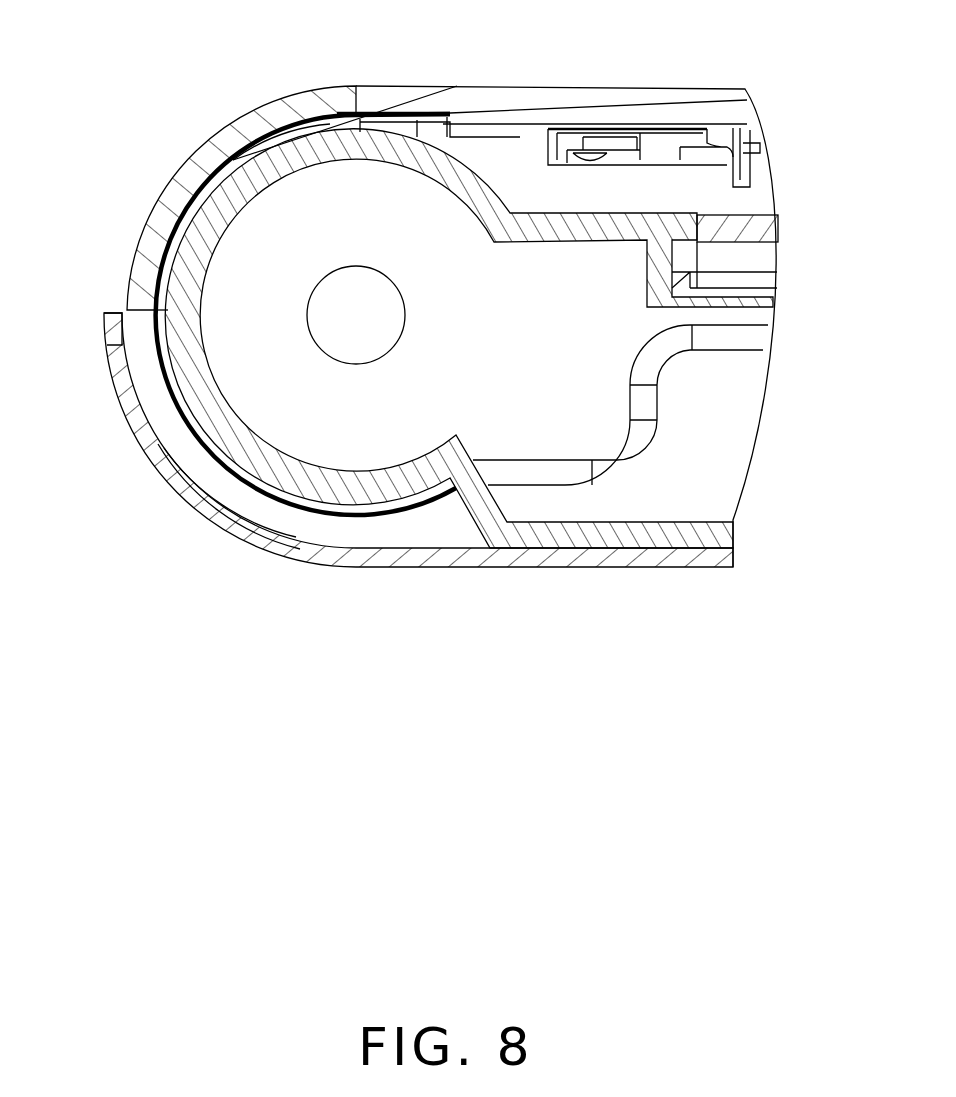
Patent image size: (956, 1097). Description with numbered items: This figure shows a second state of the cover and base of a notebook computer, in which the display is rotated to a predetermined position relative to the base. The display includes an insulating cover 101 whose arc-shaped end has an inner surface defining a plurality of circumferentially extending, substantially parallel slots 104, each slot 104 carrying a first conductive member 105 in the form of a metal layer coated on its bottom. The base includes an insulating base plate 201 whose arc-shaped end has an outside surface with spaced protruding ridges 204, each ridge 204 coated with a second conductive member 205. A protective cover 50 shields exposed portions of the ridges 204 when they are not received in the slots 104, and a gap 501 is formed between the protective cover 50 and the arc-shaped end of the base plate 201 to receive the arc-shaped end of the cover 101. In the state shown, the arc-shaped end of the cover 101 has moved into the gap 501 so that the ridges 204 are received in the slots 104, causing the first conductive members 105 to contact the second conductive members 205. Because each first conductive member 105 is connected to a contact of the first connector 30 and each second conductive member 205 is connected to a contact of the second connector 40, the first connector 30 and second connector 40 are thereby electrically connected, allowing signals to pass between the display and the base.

The first connector 30 is at (502, 147).
The second connector 40 is at (653, 360).
The protective cover 50 is at (443, 553).
The insulating cover 101 is at (677, 109).
The slots 104 is at (310, 124).
The first conductive member 105 is at (230, 157).
The insulating base plate 201 is at (633, 537).
The protruding ridges 204 is at (200, 424).
The second conductive member 205 is at (282, 500).
The gap 501 is at (137, 341).